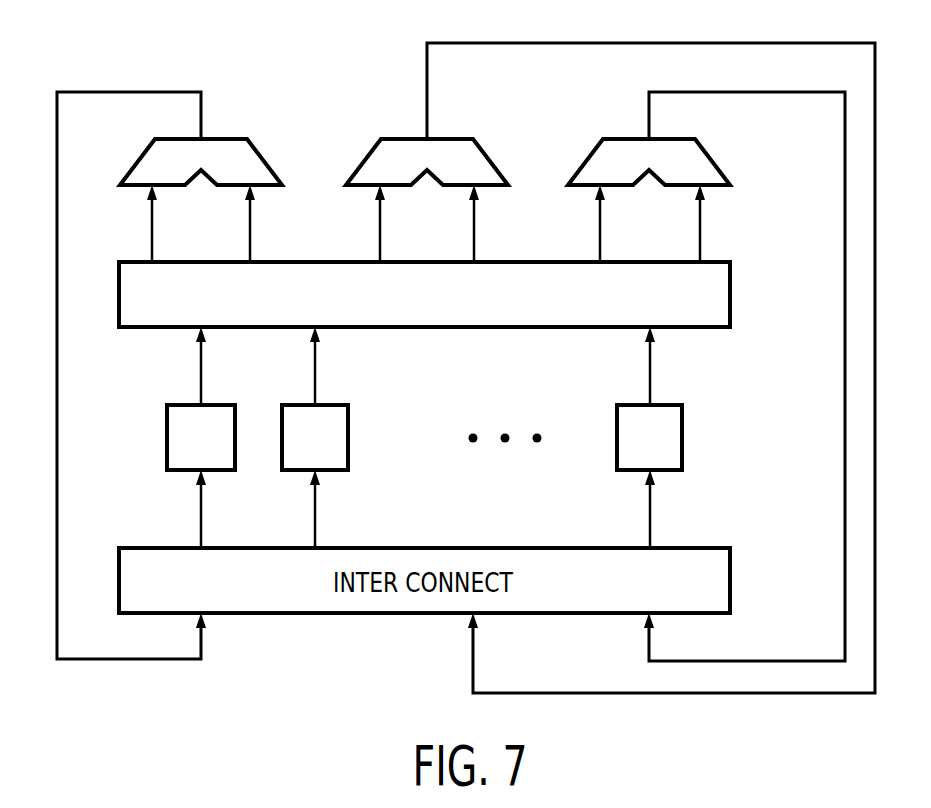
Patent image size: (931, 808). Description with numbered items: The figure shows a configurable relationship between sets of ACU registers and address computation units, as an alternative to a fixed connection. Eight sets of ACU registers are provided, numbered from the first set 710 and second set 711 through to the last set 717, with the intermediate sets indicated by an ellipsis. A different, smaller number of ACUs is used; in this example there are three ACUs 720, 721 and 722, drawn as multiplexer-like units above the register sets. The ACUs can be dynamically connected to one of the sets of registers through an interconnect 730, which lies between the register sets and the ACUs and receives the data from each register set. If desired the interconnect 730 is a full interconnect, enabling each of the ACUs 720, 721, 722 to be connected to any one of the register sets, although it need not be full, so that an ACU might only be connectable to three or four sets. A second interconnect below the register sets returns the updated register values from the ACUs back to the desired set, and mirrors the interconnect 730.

The set of ACU registers 710 is at (167, 419).
The set of ACU registers 711 is at (349, 420).
The set of ACU registers 717 is at (683, 420).
The ACU 720 is at (231, 136).
The ACU 721 is at (400, 136).
The ACU 722 is at (621, 136).
The interconnect 730 is at (732, 294).